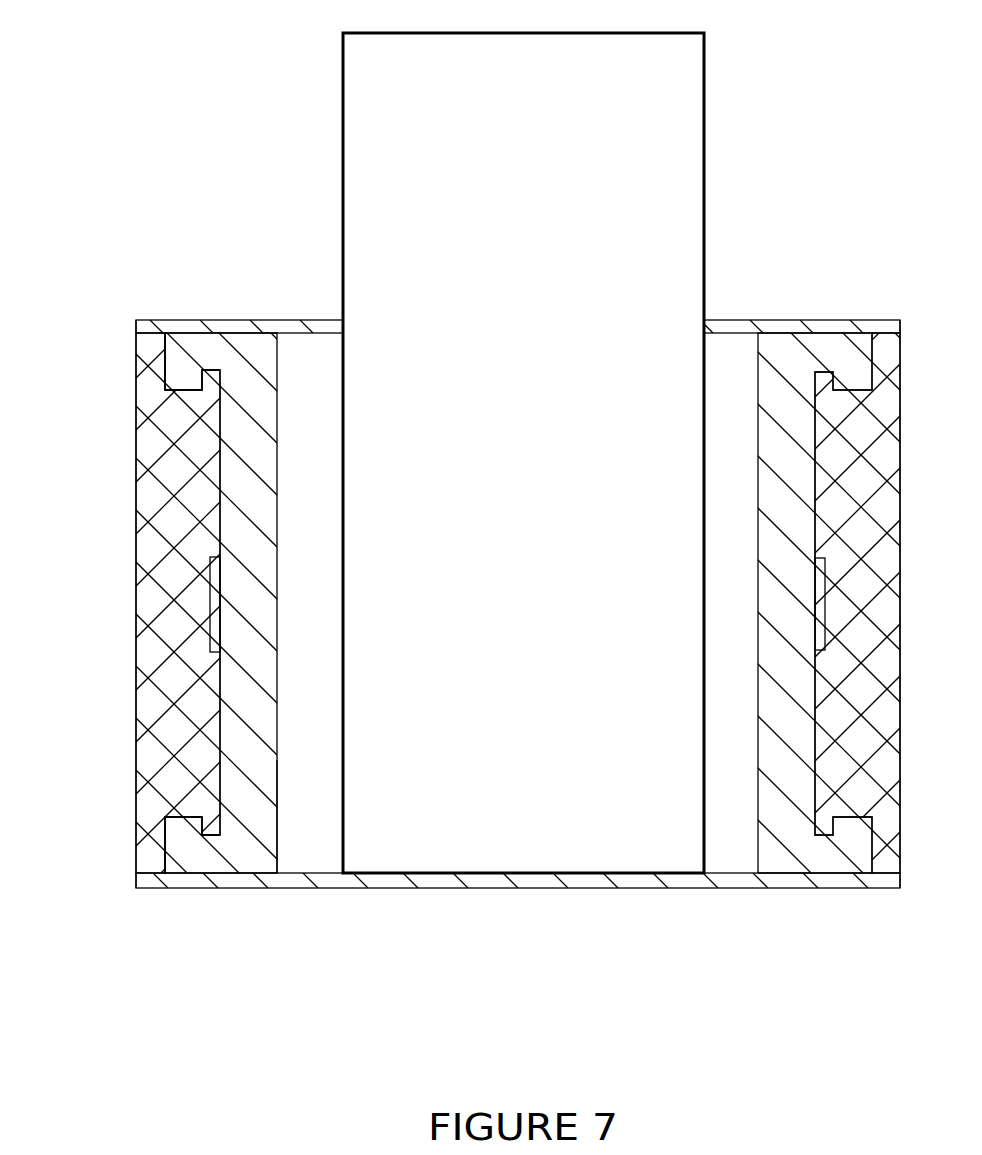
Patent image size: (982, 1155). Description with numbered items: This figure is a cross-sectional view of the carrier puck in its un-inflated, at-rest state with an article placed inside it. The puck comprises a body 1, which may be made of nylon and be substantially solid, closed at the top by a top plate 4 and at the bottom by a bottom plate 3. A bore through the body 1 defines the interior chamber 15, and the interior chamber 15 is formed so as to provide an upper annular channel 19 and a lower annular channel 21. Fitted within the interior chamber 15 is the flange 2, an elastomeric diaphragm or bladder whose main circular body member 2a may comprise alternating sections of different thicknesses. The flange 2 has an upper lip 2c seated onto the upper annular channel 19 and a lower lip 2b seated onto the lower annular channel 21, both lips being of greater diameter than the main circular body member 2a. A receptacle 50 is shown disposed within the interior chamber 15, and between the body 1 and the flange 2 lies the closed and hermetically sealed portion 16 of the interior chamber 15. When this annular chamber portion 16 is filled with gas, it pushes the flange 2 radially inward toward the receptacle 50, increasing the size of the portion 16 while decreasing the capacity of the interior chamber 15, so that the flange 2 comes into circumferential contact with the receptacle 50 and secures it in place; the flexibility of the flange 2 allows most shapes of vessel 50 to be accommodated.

The body 1 is at (137, 542).
The flange 2 is at (240, 353).
The main circular body member 2a is at (282, 827).
The lower lip 2b is at (190, 818).
The upper lip 2c is at (178, 378).
The bottom plate 3 is at (573, 890).
The top plate 4 is at (162, 318).
The interior chamber 15 is at (333, 546).
The closed and hermetically sealed portion 16 is at (215, 625).
The upper annular channel 19 is at (163, 340).
The lower annular channel 21 is at (163, 862).
The receptacle 50 is at (493, 733).